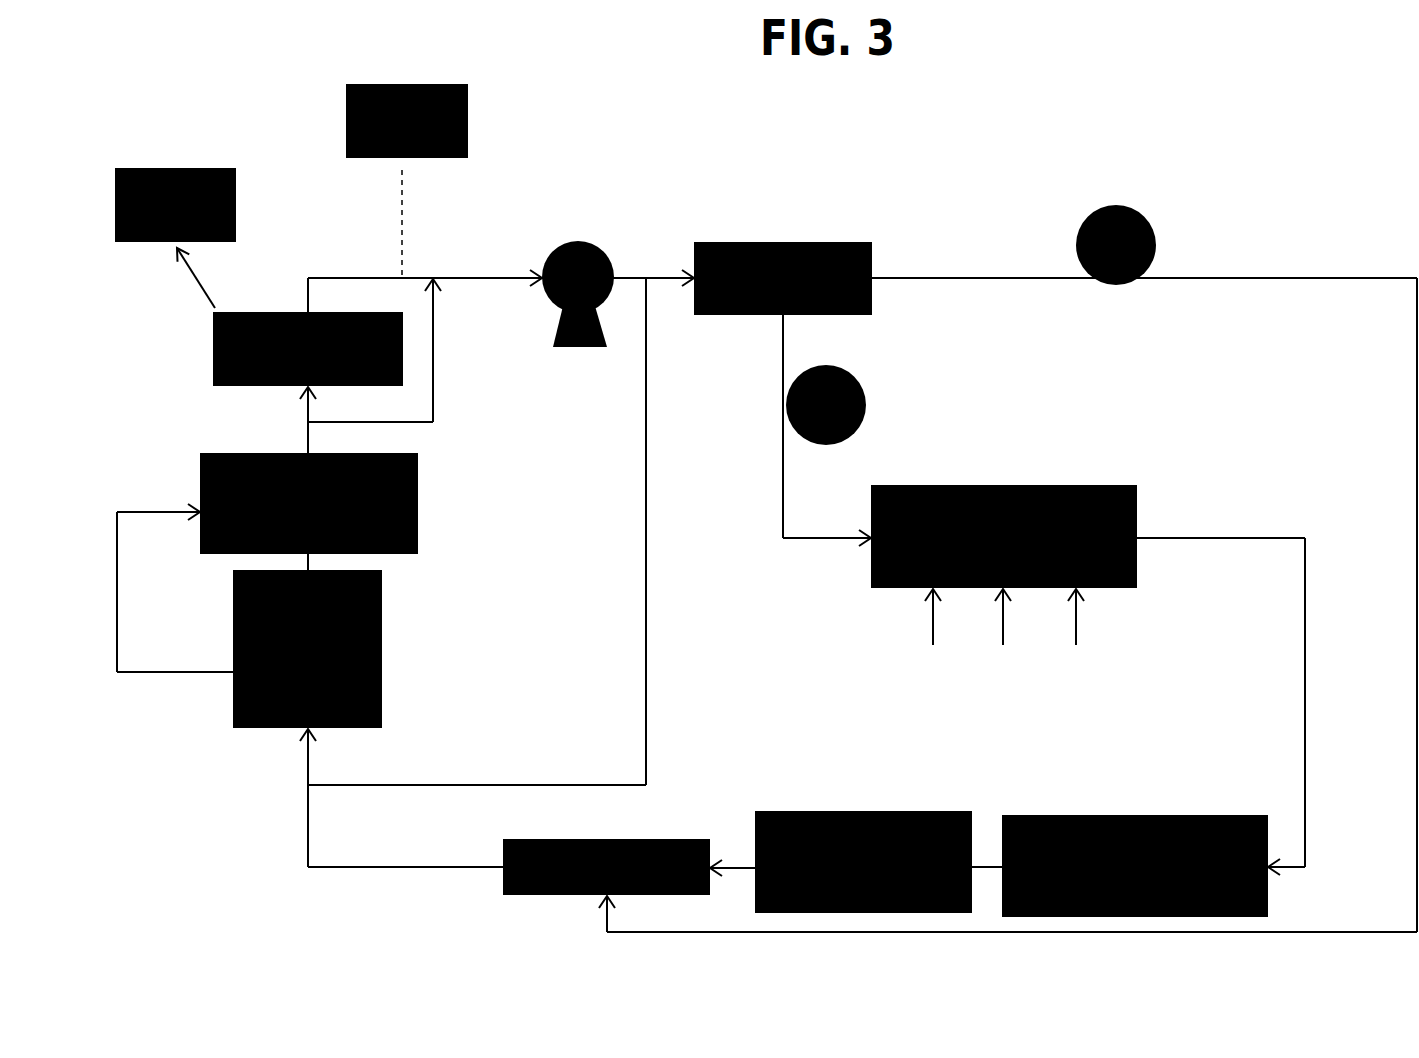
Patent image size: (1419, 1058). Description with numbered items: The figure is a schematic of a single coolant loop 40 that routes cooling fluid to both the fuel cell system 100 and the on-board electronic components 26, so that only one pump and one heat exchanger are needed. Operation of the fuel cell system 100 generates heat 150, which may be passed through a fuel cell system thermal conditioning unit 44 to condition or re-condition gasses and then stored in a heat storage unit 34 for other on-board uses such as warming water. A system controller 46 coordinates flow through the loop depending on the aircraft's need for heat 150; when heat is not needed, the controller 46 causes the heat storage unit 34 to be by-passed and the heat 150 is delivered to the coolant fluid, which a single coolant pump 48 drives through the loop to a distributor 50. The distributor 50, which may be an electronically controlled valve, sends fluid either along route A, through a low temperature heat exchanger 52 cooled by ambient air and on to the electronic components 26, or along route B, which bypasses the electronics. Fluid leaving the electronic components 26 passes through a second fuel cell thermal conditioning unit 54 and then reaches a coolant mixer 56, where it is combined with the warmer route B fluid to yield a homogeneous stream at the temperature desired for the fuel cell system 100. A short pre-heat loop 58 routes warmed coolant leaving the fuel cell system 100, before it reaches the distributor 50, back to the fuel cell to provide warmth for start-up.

The coolant loop 40 is at (756, 212).
The system controller 46 is at (407, 121).
The heat storage unit 34 is at (308, 349).
The fuel cell system thermal conditioning unit 44 is at (309, 503).
The fuel cell system 100 is at (382, 650).
The heat 150 is at (175, 588).
The coolant pump 48 is at (578, 237).
The distributor 50 is at (783, 278).
The low temperature heat exchanger 52 is at (1004, 536).
The second fuel cell thermal conditioning unit 54 is at (863, 862).
The coolant mixer 56 is at (606, 867).
The electronic components 26 is at (1135, 866).
The pre-heat loop 58 is at (646, 696).